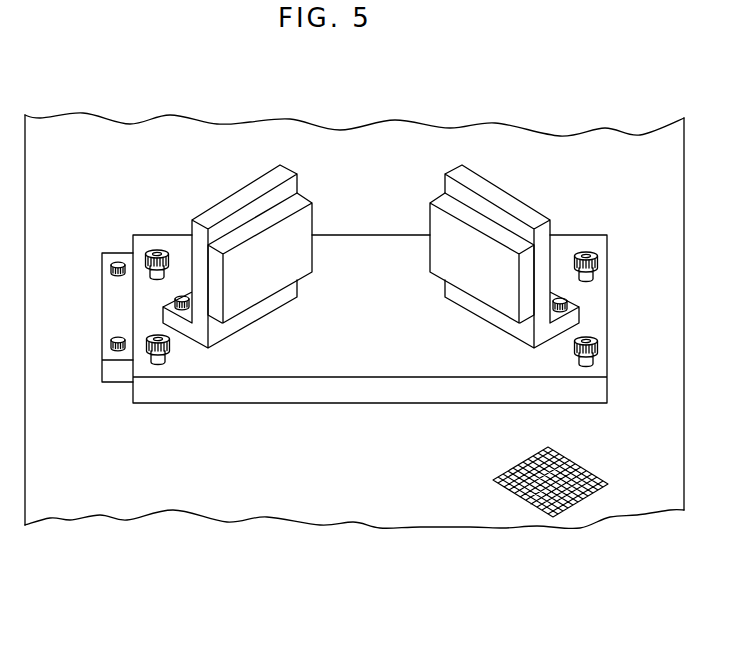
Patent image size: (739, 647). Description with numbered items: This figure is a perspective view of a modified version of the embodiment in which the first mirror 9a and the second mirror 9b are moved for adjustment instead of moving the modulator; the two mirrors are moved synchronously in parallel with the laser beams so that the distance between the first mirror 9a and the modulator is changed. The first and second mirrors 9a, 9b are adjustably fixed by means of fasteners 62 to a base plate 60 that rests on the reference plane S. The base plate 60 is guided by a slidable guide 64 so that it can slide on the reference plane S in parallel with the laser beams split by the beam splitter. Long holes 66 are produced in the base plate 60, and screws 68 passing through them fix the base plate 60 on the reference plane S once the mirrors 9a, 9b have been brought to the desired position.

The base plate 60 is at (337, 394).
The fasteners 62 is at (245, 200).
The slidable guide 64 is at (113, 327).
The long holes 66 is at (150, 276).
The screws 68 is at (158, 246).
The first mirror 9a is at (438, 223).
The second mirror 9b is at (299, 224).
The reference plane S is at (550, 482).